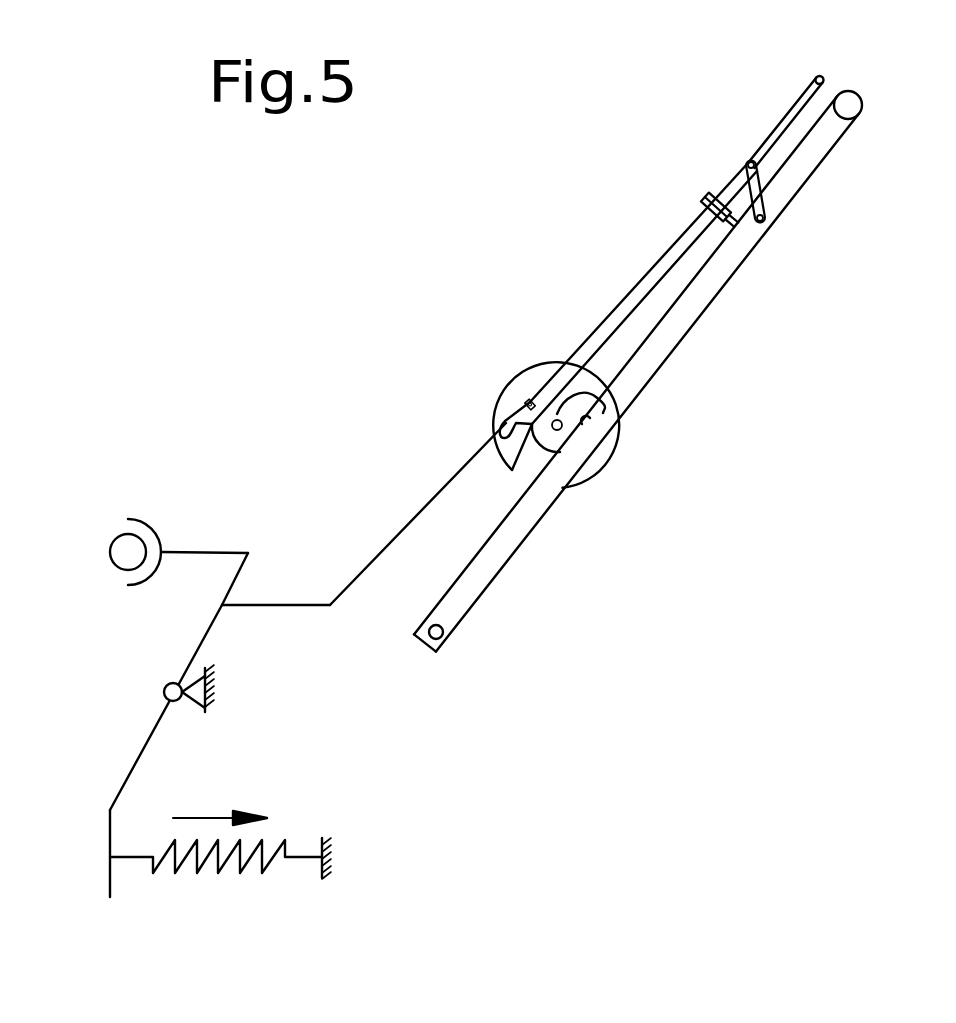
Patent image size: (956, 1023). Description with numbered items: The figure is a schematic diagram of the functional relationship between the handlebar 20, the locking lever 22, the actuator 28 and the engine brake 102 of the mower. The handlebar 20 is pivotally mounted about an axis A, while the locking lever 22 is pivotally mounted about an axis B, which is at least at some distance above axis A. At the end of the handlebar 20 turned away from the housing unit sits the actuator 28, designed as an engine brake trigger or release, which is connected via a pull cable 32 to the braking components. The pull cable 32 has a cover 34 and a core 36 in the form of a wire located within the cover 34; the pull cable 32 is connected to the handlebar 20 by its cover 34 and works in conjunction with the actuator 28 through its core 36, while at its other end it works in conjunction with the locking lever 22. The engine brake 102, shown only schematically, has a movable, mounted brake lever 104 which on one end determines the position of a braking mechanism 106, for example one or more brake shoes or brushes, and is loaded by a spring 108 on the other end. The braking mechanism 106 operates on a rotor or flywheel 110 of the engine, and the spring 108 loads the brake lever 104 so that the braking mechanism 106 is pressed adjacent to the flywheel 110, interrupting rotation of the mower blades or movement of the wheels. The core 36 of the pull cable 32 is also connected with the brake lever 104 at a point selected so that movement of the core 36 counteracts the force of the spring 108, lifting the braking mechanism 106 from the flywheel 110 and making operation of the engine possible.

The handlebar 20 is at (712, 288).
The locking lever 22 is at (528, 362).
The actuator 28 is at (790, 110).
The pull cable 32 is at (580, 258).
The cover 34 is at (667, 250).
The core 36 is at (412, 518).
The engine brake 102 is at (184, 634).
The brake lever 104 is at (147, 740).
The braking mechanism 106 is at (163, 537).
The spring 108 is at (238, 924).
The flywheel 110 is at (128, 558).
The axis A is at (437, 638).
The axis B is at (603, 413).